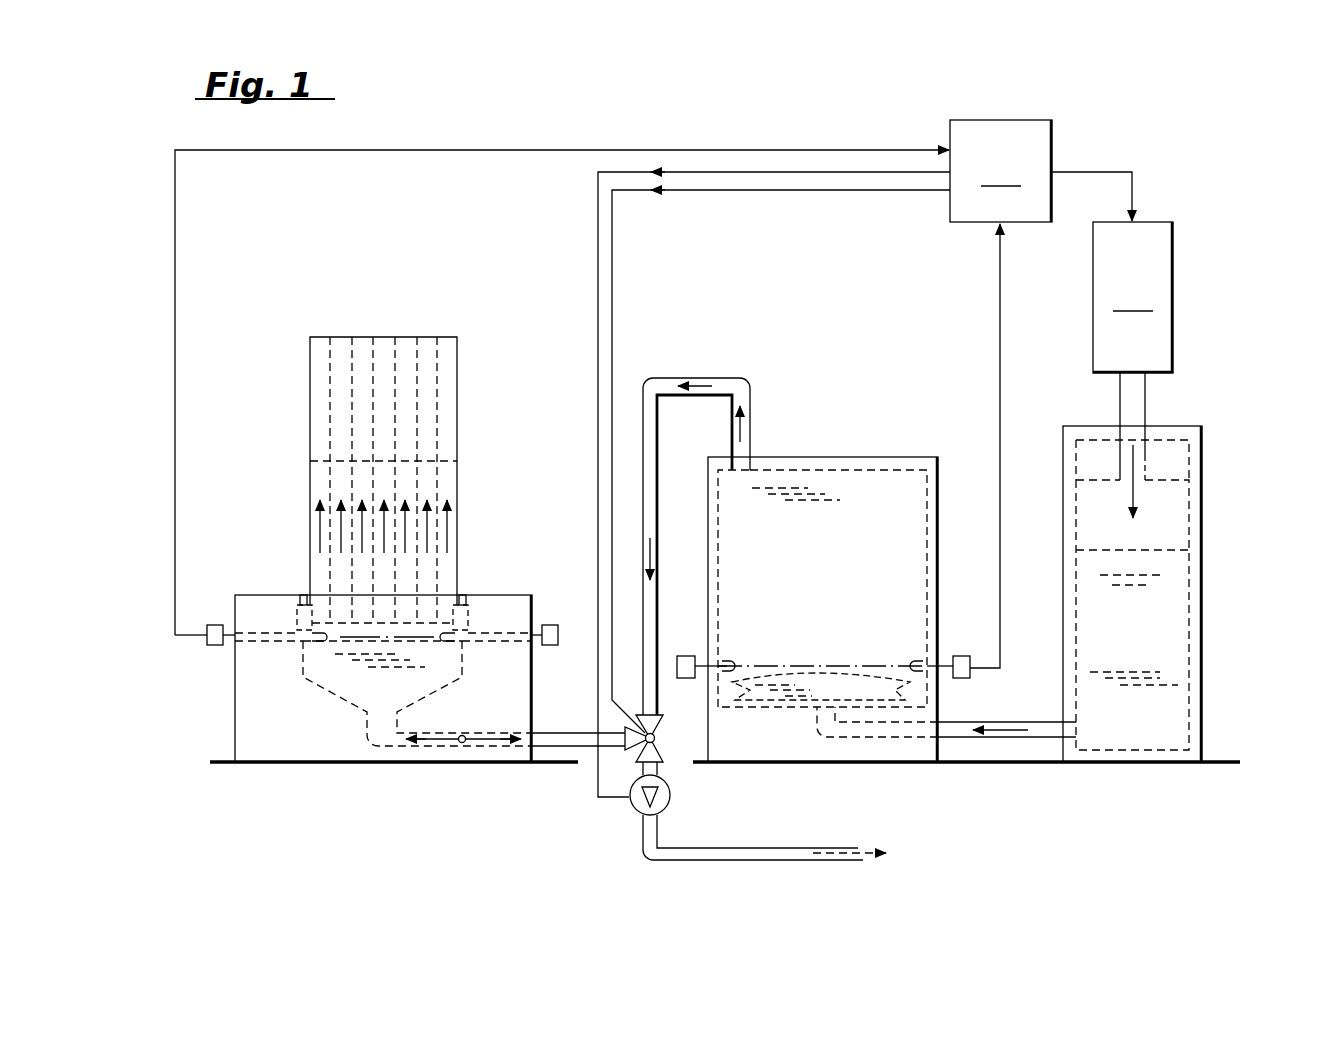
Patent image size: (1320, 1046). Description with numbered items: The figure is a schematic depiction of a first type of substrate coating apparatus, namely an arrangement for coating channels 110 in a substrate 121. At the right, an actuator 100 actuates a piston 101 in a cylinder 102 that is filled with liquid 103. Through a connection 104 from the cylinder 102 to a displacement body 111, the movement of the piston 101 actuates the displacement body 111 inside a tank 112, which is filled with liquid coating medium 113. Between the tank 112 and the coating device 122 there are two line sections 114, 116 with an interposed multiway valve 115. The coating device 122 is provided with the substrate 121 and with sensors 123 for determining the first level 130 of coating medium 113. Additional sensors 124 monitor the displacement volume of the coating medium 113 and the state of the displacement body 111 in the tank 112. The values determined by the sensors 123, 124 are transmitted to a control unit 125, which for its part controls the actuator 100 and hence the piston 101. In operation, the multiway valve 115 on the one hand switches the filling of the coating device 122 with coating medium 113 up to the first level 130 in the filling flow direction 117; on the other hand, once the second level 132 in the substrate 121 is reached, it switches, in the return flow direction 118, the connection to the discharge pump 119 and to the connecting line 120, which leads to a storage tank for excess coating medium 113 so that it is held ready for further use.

The actuator 100 is at (1133, 370).
The piston 101 is at (1173, 527).
The cylinder 102 is at (1208, 635).
The liquid 103 is at (1123, 684).
The connection 104 is at (1028, 734).
The channels 110 is at (382, 337).
The displacement body 111 is at (824, 666).
The tank 112 is at (898, 454).
The coating medium 113 is at (370, 666).
The line section 114 is at (697, 384).
The multiway valve 115 is at (660, 742).
The line section 116 is at (472, 727).
The filling flow direction 117 is at (437, 744).
The return flow direction 118 is at (488, 748).
The discharge pump 119 is at (632, 809).
The connecting line 120 is at (734, 848).
The substrate 121 is at (306, 351).
The coating device 122 is at (233, 695).
The sensors 123 is at (218, 624).
The sensors 124 is at (730, 666).
The control unit 125 is at (653, 458).
The first level 130 is at (374, 637).
The second level 132 is at (346, 458).